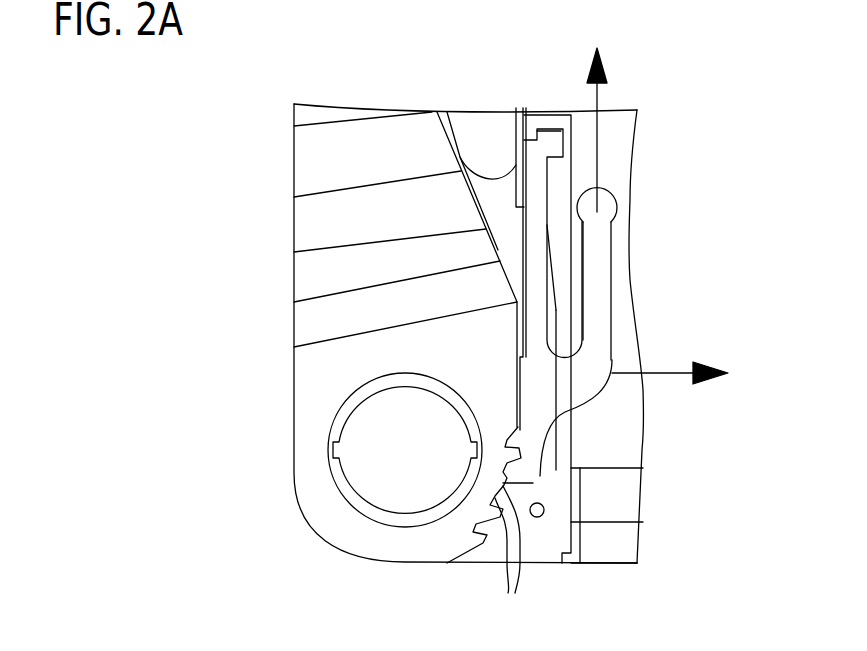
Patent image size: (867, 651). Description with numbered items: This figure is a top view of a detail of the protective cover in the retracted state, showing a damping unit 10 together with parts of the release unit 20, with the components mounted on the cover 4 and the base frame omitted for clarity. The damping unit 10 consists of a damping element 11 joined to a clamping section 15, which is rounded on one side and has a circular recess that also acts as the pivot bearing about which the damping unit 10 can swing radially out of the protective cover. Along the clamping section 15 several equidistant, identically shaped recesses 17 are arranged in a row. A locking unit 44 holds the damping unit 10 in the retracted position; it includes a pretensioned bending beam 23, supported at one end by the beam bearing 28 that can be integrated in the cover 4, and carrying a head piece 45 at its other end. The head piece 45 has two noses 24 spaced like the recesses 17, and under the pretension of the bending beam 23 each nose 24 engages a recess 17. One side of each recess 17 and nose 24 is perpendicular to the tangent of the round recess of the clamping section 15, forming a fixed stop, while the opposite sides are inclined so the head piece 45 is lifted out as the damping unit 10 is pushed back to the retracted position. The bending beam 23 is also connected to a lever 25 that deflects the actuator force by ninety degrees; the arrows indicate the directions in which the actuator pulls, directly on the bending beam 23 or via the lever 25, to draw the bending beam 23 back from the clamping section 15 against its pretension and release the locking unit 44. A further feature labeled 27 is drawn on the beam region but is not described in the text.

The damping unit 10 is at (281, 293).
The damping element 11 is at (323, 152).
The clamping section 15 is at (368, 365).
The recess 17 is at (494, 527).
The cover 4 is at (605, 538).
The release unit 20 is at (655, 432).
The bending beam 23 is at (535, 176).
The nose 24 is at (503, 476).
The lever 25 is at (600, 248).
The opening 27 is at (600, 214).
The beam bearing 28 is at (548, 140).
The locking unit 44 is at (639, 289).
The head piece 45 is at (518, 436).